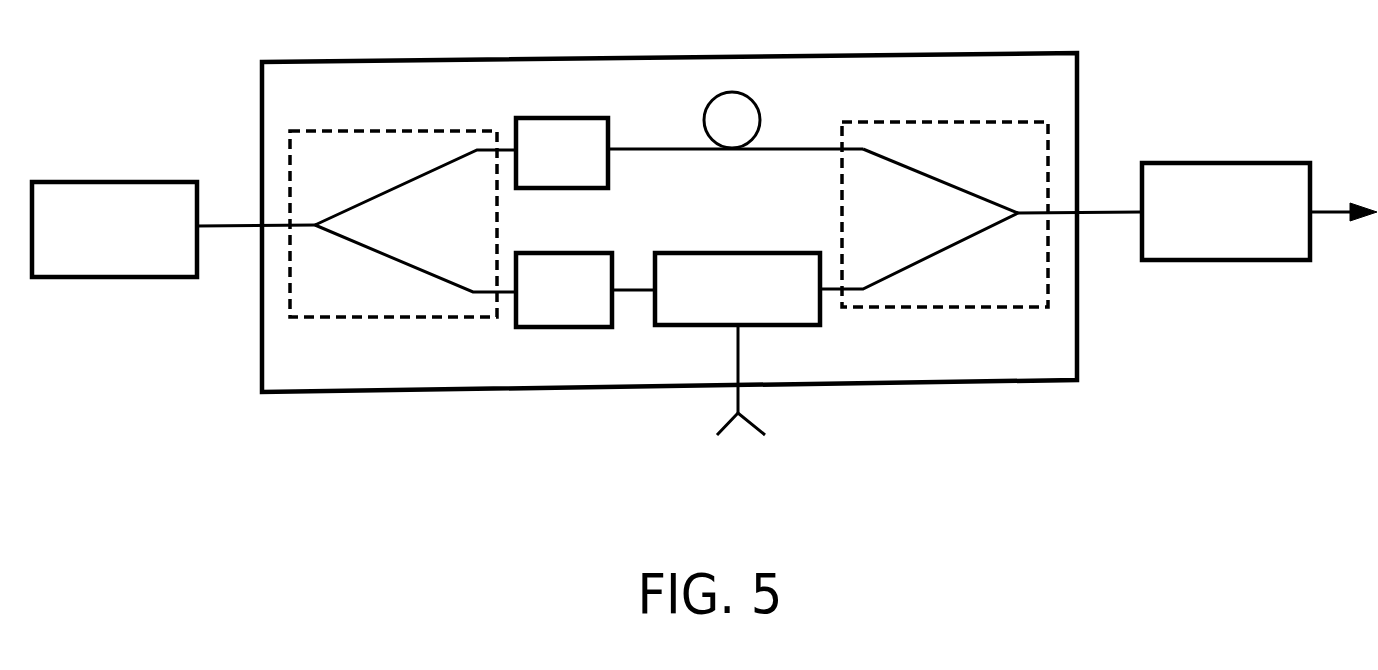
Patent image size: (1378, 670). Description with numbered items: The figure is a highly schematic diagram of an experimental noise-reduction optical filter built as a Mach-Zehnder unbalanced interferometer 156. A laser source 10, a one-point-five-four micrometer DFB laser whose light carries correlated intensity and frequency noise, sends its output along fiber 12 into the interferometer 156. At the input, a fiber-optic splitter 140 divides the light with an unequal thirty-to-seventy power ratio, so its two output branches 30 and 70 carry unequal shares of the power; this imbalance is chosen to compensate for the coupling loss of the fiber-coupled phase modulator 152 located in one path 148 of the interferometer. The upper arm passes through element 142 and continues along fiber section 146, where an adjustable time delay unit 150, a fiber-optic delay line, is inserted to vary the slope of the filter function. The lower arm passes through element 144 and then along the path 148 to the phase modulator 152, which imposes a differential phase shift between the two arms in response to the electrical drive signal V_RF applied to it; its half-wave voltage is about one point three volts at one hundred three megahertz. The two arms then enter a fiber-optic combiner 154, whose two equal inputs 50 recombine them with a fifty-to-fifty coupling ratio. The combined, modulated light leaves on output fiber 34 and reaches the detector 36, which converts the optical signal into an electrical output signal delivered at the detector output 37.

The laser source 10 is at (114, 198).
The optical fiber 12 is at (256, 196).
The first optical path 30 is at (415, 187).
The second optical path 70 is at (415, 258).
The combiner output paths 50 is at (919, 219).
The output fiber 34 is at (1080, 244).
The detector 36 is at (1226, 181).
The detector output 37 is at (1343, 183).
The fiber-optic splitter 140 is at (393, 194).
The polarization controller 142 is at (536, 132).
The polarization controller 144 is at (543, 313).
The fiber delay path 146 is at (735, 130).
The path 148 is at (630, 331).
The adjustable time delay unit 150 is at (733, 106).
The phase modulator 152 is at (727, 351).
The fiber-optic combiner 154 is at (945, 185).
The unbalanced interferometer 156 is at (669, 199).